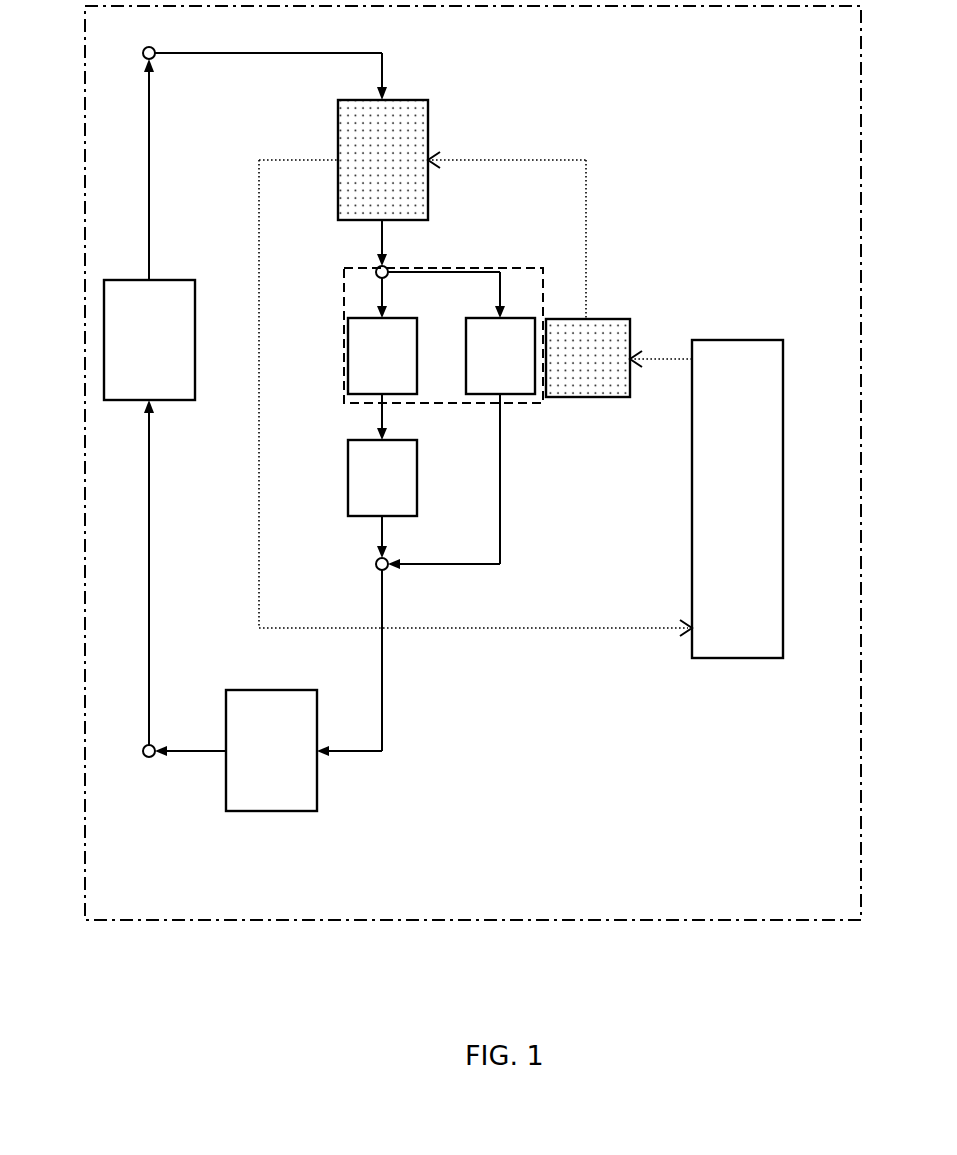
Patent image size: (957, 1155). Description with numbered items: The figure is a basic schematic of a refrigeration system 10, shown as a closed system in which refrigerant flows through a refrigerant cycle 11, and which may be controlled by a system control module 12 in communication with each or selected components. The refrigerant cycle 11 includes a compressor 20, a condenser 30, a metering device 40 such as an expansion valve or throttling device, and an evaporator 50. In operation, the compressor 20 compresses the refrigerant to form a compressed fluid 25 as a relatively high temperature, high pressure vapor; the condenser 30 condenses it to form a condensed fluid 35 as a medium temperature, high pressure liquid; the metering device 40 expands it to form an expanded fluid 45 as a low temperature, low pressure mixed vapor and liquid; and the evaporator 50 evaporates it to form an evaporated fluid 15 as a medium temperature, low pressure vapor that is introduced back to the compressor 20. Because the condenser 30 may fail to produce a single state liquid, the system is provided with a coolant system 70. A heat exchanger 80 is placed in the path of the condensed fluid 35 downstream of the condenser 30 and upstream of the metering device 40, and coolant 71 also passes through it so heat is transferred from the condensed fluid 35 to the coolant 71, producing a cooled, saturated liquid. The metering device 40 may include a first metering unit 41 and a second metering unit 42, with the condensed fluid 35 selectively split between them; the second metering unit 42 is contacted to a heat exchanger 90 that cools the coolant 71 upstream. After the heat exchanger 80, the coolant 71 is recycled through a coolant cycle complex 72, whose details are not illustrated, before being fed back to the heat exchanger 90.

The refrigeration system 10 is at (98, 991).
The refrigerant cycle 11 is at (195, 836).
The system control module 12 is at (720, 920).
The evaporated fluid 15 is at (382, 660).
The compressor 20 is at (257, 765).
The compressed fluid 25 is at (149, 668).
The condenser 30 is at (135, 356).
The condensed fluid 35 is at (149, 192).
The metering device 40 is at (344, 298).
The first metering unit 41 is at (368, 360).
The second metering unit 42 is at (486, 360).
The expanded fluid 45 is at (382, 420).
The evaporator 50 is at (368, 482).
The coolant system 70 is at (579, 727).
The coolant 71 is at (586, 200).
The coolant cycle complex 72 is at (723, 513).
The heat exchanger 80 is at (369, 174).
The heat exchanger 90 is at (574, 360).